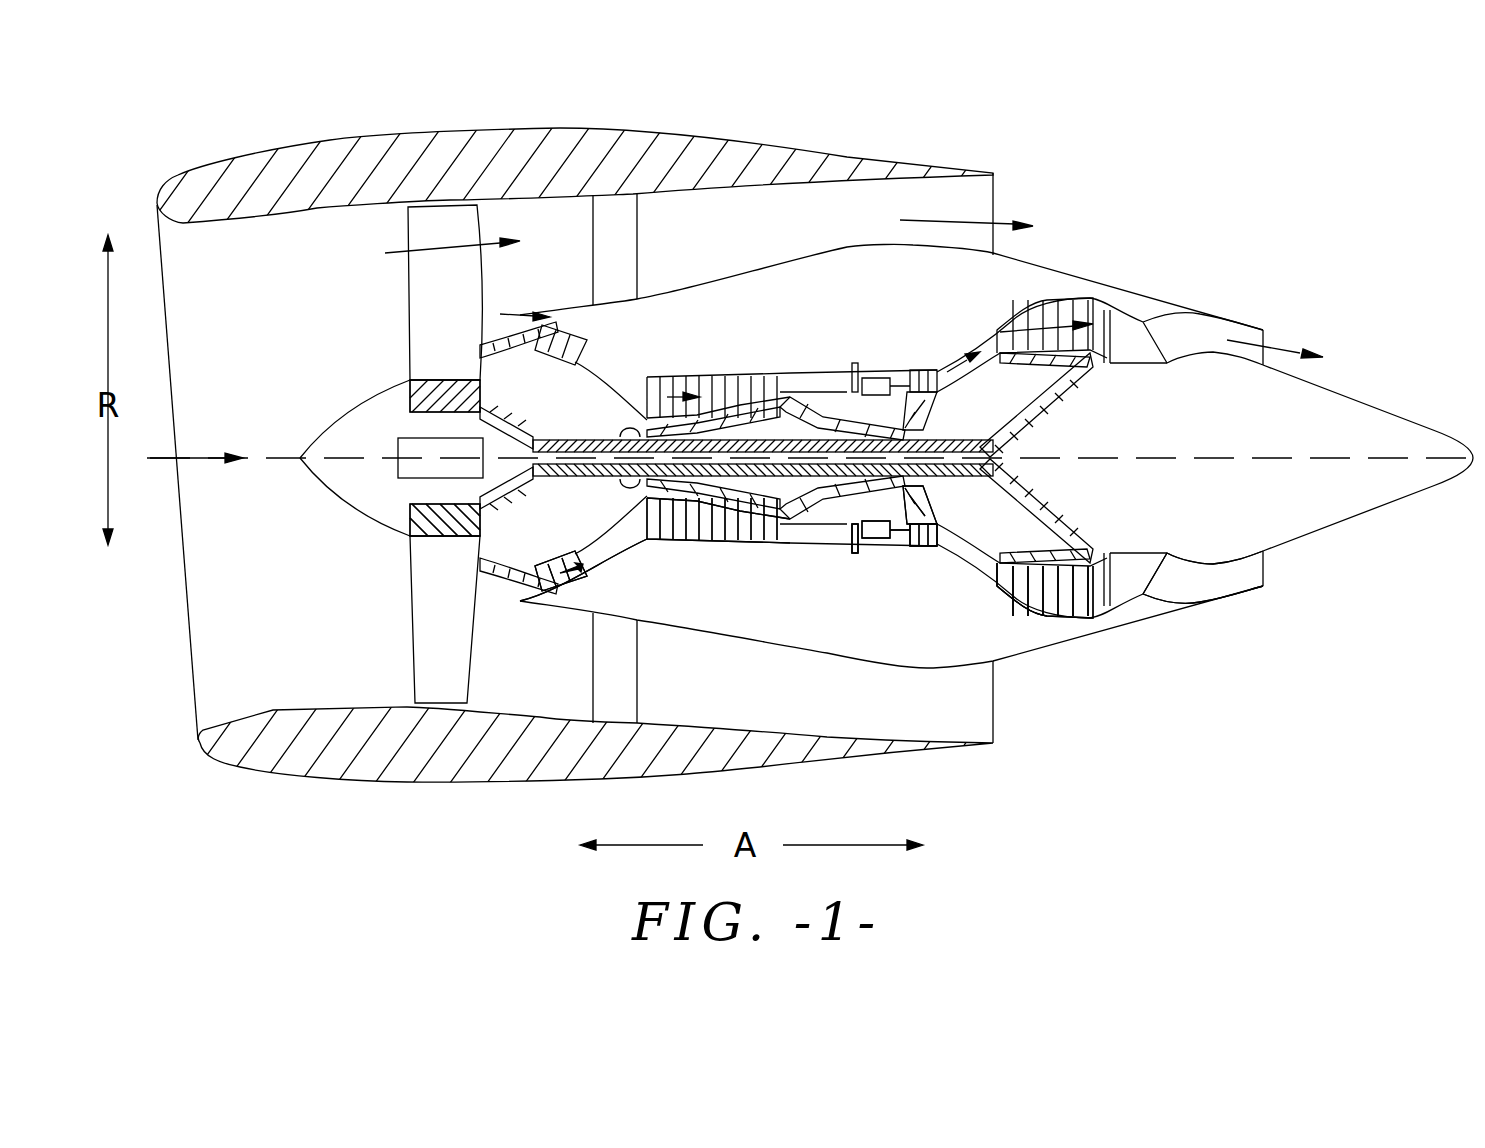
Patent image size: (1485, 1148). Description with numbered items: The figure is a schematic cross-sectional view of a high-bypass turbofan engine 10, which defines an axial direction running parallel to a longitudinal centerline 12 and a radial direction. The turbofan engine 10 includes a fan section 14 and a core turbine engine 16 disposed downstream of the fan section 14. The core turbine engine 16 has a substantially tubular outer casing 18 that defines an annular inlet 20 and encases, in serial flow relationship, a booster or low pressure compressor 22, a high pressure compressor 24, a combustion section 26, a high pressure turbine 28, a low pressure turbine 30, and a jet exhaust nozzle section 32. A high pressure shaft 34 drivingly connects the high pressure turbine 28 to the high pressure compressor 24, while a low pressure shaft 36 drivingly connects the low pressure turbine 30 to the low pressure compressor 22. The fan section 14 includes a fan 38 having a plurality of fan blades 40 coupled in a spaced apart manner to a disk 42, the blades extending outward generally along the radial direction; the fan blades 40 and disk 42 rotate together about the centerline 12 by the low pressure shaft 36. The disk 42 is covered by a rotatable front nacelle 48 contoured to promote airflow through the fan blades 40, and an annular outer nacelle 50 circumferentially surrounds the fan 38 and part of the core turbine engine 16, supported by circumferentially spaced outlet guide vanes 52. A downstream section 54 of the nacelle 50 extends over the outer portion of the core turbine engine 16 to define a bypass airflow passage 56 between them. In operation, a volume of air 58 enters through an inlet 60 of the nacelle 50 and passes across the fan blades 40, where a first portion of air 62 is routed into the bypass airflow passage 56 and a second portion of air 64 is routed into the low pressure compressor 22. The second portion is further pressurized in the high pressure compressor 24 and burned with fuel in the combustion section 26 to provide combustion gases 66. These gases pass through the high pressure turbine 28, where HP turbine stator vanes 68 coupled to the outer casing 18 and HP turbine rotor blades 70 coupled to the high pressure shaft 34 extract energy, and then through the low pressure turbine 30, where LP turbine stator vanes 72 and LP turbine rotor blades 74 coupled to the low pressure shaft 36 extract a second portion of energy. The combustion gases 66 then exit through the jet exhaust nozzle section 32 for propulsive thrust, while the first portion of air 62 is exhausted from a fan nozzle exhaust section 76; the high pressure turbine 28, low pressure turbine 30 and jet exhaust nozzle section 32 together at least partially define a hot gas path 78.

The turbofan engine 10 is at (1248, 203).
The longitudinal centerline 12 is at (1175, 453).
The fan section 14 is at (495, 115).
The core turbine engine 16 is at (808, 328).
The outer casing 18 is at (835, 657).
The annular inlet 20 is at (532, 581).
The low pressure compressor 22 is at (592, 545).
The high pressure compressor 24 is at (671, 532).
The combustion section 26 is at (866, 546).
The high pressure turbine 28 is at (950, 542).
The low pressure turbine 30 is at (1098, 620).
The jet exhaust nozzle section 32 is at (1277, 333).
The high pressure shaft 34 is at (920, 400).
The low pressure shaft 36 is at (593, 437).
The fan 38 is at (396, 298).
The fan blades 40 is at (412, 640).
The disk 42 is at (405, 385).
The front nacelle 48 is at (323, 422).
The outer nacelle 50 is at (477, 782).
The outlet guide vanes 52 is at (637, 217).
The downstream section of the nacelle 54 is at (800, 148).
The bypass airflow passage 56 is at (754, 240).
The volume of air 58 is at (193, 455).
The inlet 60 is at (193, 693).
The first portion of air 62 is at (427, 247).
The second portion of air 64 is at (497, 330).
The combustion gases 66 is at (1057, 320).
The HP turbine stator vanes 68 is at (913, 553).
The HP turbine rotor blades 70 is at (923, 550).
The LP turbine stator vanes 72 is at (998, 580).
The LP turbine rotor blades 74 is at (1015, 597).
The fan nozzle exhaust section 76 is at (997, 200).
The hot gas path 78 is at (985, 340).